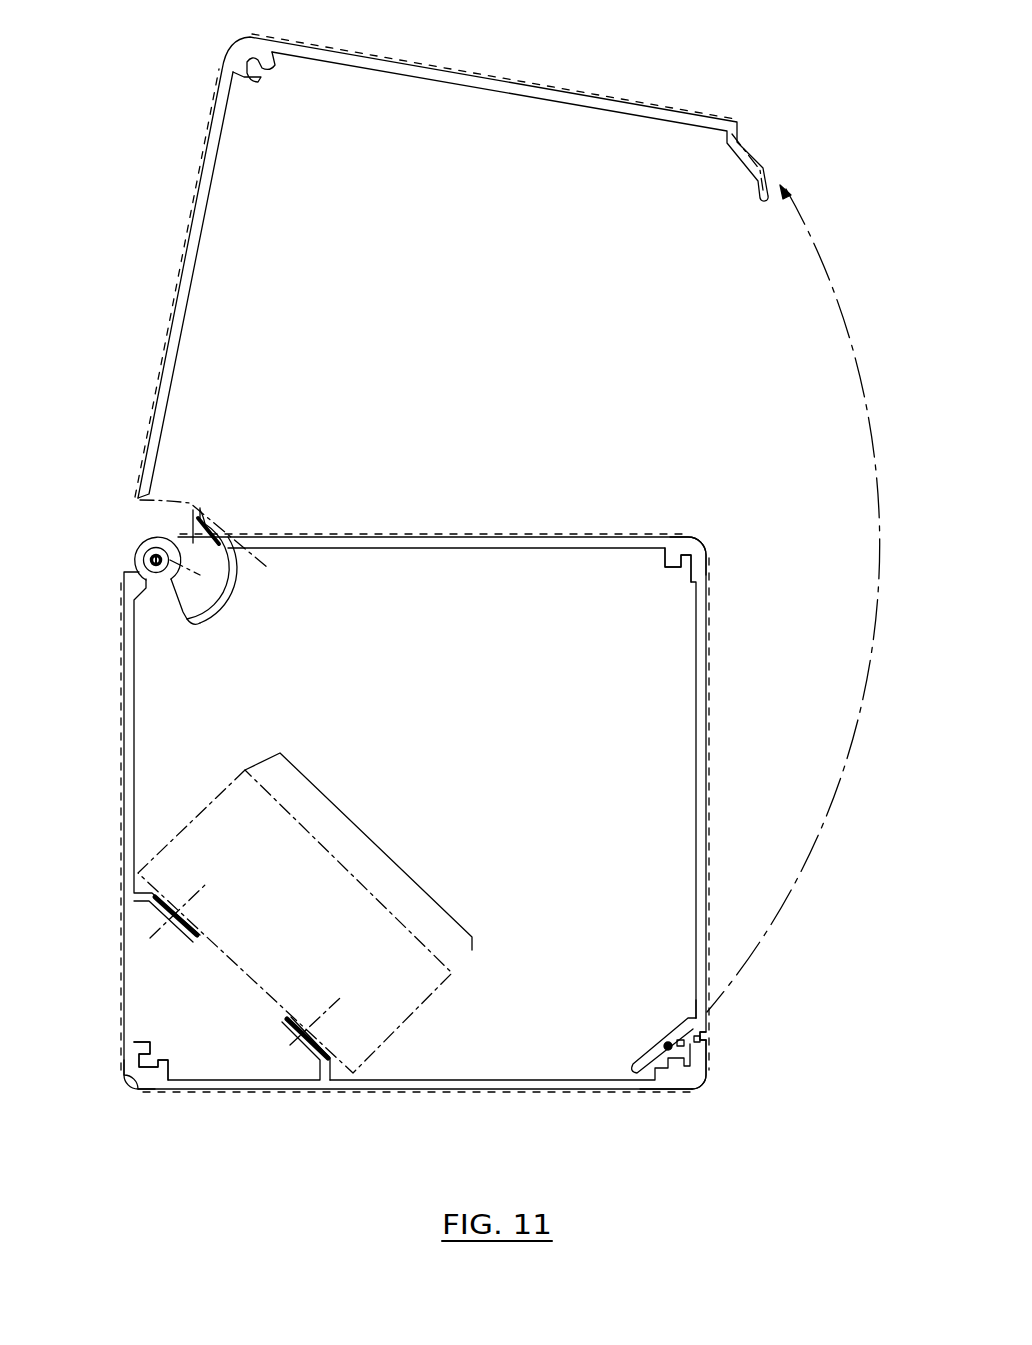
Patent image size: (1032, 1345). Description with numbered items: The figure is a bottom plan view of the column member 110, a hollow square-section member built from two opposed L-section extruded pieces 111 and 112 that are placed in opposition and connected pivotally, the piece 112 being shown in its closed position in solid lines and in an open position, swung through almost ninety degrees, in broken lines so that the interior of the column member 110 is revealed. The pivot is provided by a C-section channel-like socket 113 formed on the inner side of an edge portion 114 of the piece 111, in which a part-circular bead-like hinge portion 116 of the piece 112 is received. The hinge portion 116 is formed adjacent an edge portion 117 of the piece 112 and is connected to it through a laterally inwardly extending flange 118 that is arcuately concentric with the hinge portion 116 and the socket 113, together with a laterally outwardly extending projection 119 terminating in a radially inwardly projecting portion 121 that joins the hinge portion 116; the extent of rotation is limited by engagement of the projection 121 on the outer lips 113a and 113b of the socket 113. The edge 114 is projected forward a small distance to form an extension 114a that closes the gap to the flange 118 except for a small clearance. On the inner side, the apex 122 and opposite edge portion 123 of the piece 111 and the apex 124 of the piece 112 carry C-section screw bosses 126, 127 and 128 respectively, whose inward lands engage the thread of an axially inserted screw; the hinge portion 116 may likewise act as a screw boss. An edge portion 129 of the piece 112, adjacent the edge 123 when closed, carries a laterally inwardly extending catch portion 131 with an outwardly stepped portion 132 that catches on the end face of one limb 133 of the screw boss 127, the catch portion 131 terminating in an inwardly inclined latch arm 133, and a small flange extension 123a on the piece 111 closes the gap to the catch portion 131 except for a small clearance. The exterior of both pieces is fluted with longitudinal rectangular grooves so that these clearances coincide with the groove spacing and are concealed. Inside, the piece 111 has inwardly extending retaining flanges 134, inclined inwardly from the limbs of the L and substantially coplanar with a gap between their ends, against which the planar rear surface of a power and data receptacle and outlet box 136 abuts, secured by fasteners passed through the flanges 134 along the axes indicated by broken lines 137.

The column member 110 is at (442, 510).
The L-section extruded piece 111 is at (482, 1094).
The L-section extruded piece 112 is at (537, 86).
The C-section socket 113 is at (157, 537).
The outer lip of socket 113a is at (190, 540).
The outer lip of socket 113b is at (140, 590).
The edge portion 114 is at (133, 545).
The extension 114a is at (198, 540).
The hinge portion 116 is at (140, 568).
The edge portion 117 is at (231, 538).
The flange 118 is at (222, 592).
The projection 119 is at (172, 612).
The radially inwardly projecting portion 121 is at (100, 645).
The apex 122 is at (133, 1092).
The edge portion 123 is at (700, 1078).
The flange extension 123a is at (703, 1037).
The apex 124 is at (707, 553).
The screw boss 126 is at (166, 1063).
The screw boss 127 is at (656, 1092).
The screw boss 128 is at (688, 583).
The edge portion 129 is at (706, 1003).
The catch portion 131 is at (648, 1037).
The stepped portion 132 is at (662, 1046).
The limb of screw boss / latch arm 133 is at (633, 1061).
The retaining flange 134 is at (195, 925).
The power and data receptacle and outlet box 136 is at (228, 790).
The fastener axis line 137 is at (185, 900).